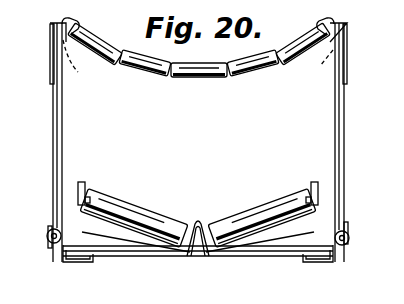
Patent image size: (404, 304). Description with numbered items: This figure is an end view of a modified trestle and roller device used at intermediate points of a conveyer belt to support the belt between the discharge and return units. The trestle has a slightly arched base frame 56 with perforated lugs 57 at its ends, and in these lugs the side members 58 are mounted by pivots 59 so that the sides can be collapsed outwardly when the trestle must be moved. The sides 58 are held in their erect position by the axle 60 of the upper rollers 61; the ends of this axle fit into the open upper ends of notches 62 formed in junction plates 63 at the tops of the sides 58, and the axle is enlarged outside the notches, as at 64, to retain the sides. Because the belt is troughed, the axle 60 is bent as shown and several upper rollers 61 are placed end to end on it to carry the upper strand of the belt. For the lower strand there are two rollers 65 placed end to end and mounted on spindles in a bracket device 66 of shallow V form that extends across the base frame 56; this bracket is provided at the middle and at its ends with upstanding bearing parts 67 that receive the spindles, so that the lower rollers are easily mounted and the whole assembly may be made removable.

The base frame 56 is at (92, 262).
The perforated lugs 57 is at (50, 231).
The side members 58 is at (53, 123).
The pivots 59 is at (51, 248).
The axle 60 is at (341, 28).
The upper rollers 61 is at (131, 51).
The notches 62 is at (198, 64).
The junction plates 63 is at (52, 77).
The enlarged axle portions 64 is at (52, 32).
The lower rollers 65 is at (228, 208).
The bracket device 66 is at (215, 250).
The upstanding bearing parts 67 is at (83, 185).